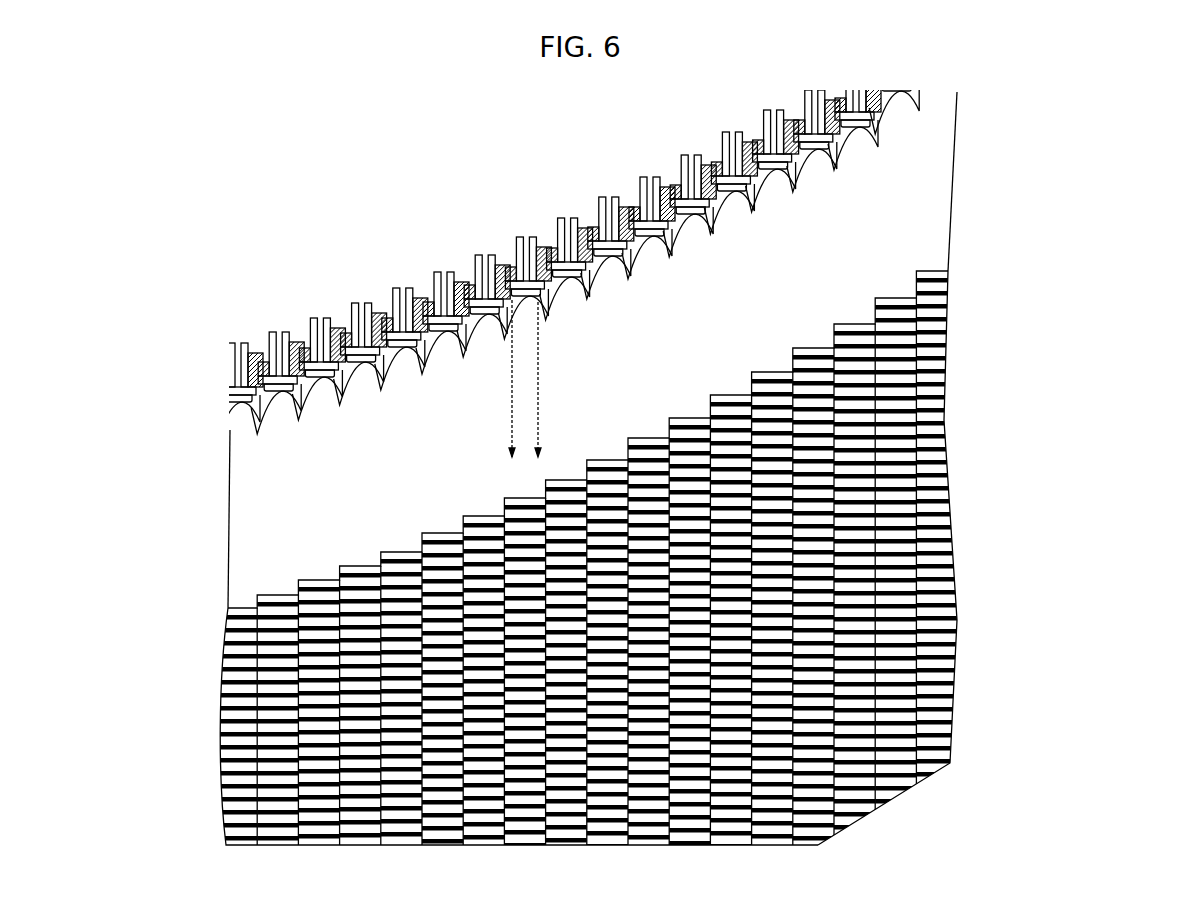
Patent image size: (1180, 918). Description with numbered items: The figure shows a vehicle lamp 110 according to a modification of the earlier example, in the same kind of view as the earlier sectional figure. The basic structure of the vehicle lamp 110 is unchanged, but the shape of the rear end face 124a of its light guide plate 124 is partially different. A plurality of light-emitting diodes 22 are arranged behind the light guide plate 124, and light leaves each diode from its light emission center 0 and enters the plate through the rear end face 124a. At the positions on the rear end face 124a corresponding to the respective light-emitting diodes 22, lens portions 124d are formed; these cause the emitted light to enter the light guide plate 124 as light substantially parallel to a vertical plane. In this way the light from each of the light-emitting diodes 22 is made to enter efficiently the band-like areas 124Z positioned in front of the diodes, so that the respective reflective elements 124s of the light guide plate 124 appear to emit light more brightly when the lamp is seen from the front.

The vehicle lamp 110 is at (272, 208).
The light guide plate 124 is at (960, 353).
The rear end face 124a is at (312, 343).
The lens portions 124d is at (415, 300).
The band-like areas 124Z is at (960, 643).
The reflective elements 124s is at (224, 770).
The light-emitting diodes 22 is at (648, 250).
The light emission center 0 is at (525, 297).